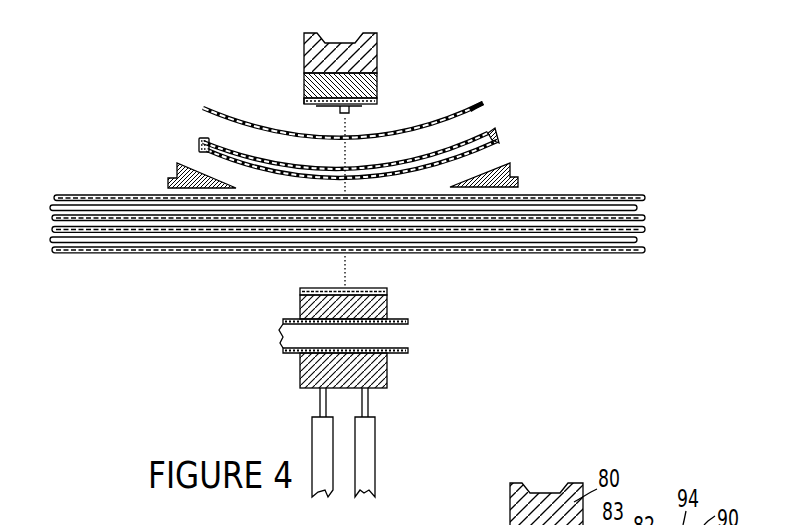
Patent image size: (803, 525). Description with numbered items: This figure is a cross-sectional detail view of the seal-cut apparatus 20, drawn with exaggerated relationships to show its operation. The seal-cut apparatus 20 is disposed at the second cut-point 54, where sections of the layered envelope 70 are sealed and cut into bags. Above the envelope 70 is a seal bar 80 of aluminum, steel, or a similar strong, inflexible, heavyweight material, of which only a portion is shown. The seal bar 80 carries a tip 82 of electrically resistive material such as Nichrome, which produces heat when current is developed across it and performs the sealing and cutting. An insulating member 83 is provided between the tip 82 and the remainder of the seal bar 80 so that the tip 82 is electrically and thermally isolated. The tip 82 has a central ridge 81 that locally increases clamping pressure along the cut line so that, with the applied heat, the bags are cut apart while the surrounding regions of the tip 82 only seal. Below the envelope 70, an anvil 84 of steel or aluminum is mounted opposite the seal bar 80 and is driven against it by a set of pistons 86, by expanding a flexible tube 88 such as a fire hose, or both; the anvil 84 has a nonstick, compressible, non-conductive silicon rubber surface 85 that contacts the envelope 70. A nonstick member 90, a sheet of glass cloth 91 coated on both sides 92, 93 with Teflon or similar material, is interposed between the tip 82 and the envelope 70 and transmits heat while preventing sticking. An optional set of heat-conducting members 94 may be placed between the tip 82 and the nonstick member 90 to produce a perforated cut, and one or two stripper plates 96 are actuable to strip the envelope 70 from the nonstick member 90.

The seal-cut apparatus 20 is at (237, 28).
The second cut-point 54 is at (343, 118).
The envelope 70 is at (142, 265).
The seal bar 80 is at (366, 53).
The central ridge 81 is at (338, 112).
The tip 82 is at (304, 104).
The insulating member 83 is at (379, 102).
The anvil 84 is at (386, 307).
The surface 85 is at (300, 293).
The pistons 86 is at (368, 459).
The tube 88 is at (390, 336).
The nonstick member 90 is at (511, 134).
The glass cloth 91 is at (206, 146).
The side 92 is at (208, 146).
The side 93 is at (200, 148).
The heat-conducting members 94 is at (485, 104).
The stripper plates 96 is at (168, 188).